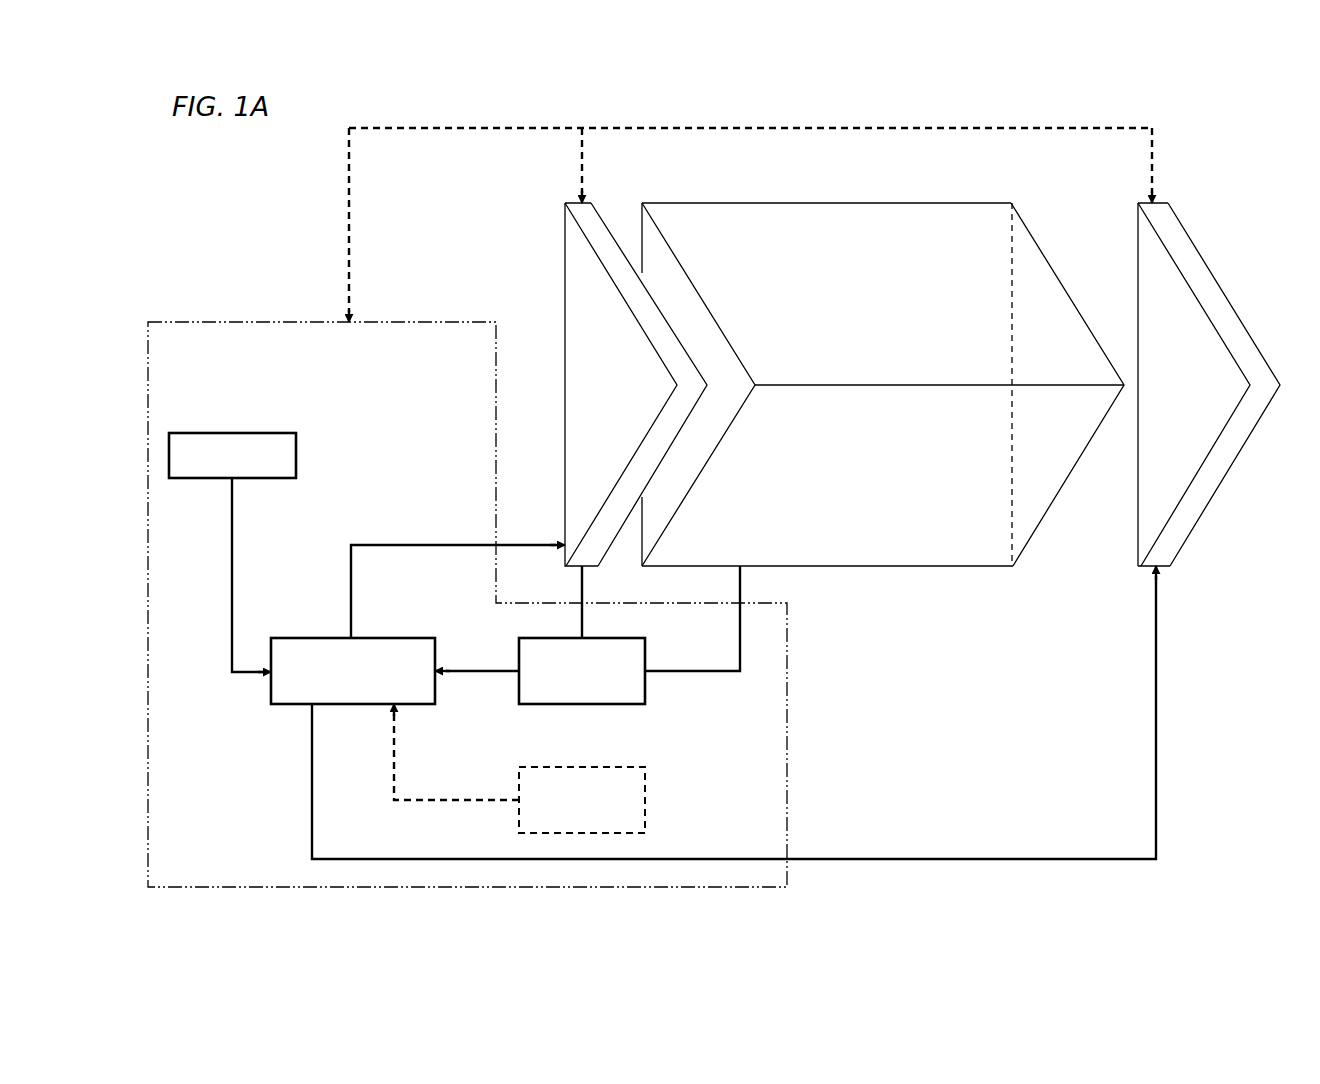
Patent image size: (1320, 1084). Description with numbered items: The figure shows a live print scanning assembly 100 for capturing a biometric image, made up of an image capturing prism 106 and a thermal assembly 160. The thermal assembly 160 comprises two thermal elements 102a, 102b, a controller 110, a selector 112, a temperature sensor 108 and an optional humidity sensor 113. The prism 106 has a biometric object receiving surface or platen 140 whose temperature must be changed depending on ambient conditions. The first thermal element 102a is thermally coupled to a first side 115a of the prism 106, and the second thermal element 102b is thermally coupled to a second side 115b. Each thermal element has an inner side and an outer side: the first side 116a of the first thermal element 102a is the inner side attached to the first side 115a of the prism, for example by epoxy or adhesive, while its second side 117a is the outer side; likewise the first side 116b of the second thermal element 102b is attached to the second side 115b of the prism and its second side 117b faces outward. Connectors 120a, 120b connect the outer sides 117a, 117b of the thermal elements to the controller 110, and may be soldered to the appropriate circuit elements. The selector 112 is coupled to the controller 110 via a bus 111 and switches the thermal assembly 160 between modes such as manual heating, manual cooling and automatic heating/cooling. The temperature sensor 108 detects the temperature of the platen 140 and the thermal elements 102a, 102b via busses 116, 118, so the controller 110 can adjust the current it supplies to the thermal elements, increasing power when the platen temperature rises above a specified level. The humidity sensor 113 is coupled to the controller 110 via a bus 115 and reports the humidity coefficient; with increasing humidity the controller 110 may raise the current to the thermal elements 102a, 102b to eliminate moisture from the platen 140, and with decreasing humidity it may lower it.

The live print scanning assembly 100 is at (1205, 137).
The thermal assembly 160 is at (351, 128).
The first thermal element 102a is at (609, 354).
The second thermal element 102b is at (1187, 367).
The image capturing prism 106 is at (883, 362).
The platen 140 is at (978, 215).
The first side of image capturing prism 115a is at (650, 236).
The second side of image capturing prism 115b is at (1036, 230).
The first side of first thermal element 116a is at (612, 227).
The first side of second thermal element 116b is at (1144, 253).
The second side of first thermal element 117a is at (572, 300).
The second side of second thermal element 117b is at (1226, 292).
The selector 112 is at (299, 456).
The bus 111 is at (235, 535).
The controller 110 is at (318, 638).
The connector 120a is at (445, 545).
The connector 120b is at (1158, 700).
The bus 116 is at (477, 671).
The bus 118 is at (584, 630).
The temperature sensor 108 is at (578, 704).
The bus 115 is at (475, 800).
The humidity sensor 113 is at (655, 792).